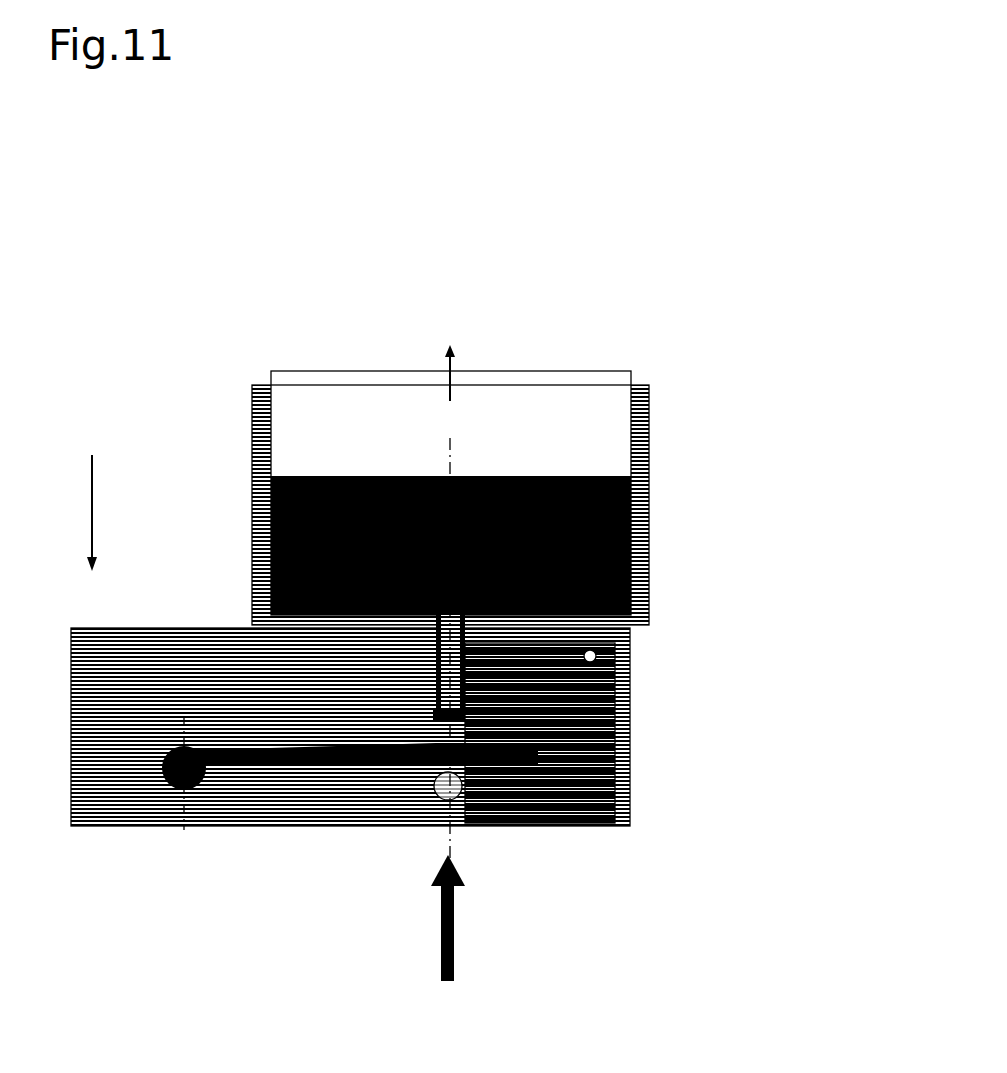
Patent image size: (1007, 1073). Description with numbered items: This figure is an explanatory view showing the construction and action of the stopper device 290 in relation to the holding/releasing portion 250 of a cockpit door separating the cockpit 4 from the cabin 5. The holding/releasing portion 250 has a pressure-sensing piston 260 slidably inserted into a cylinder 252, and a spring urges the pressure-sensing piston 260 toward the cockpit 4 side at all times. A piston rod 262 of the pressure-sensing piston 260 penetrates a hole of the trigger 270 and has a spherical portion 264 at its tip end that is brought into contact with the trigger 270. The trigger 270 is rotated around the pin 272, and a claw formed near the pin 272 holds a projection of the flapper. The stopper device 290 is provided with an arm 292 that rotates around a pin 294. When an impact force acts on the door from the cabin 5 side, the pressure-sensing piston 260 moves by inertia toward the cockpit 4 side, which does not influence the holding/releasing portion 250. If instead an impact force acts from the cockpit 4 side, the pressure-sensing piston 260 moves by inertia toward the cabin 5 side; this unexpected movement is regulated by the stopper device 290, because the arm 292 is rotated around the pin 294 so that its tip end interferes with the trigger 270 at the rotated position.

The cockpit 4 is at (158, 981).
The cabin 5 is at (160, 371).
The holding/releasing portion 250 is at (732, 495).
The cylinder 252 is at (641, 420).
The pressure-sensing piston 260 is at (505, 502).
The piston rod 262 is at (563, 633).
The spherical portion 264 is at (438, 787).
The trigger 270 is at (278, 758).
The pin 272 is at (158, 780).
The stopper device 290 is at (732, 716).
The arm 292 is at (620, 672).
The pin 294 is at (610, 639).